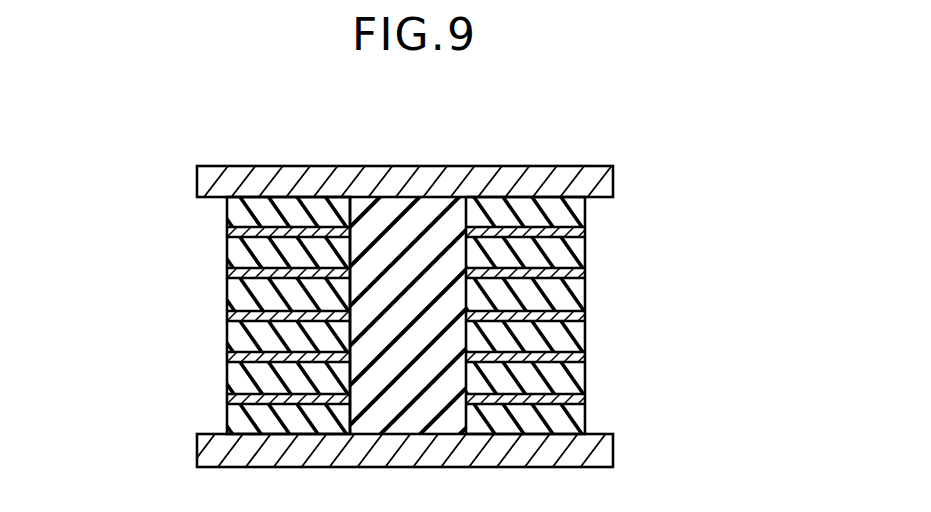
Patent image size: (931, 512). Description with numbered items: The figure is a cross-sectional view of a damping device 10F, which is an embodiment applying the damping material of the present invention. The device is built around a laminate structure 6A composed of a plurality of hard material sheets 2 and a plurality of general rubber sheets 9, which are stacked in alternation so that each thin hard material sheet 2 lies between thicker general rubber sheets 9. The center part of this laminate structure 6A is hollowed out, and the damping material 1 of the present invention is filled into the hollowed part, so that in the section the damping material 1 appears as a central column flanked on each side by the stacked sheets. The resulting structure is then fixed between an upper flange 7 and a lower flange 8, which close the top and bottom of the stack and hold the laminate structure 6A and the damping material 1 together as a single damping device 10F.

The damping material 1 is at (437, 232).
The hard material sheets 2 is at (585, 231).
The laminate structure 6A is at (219, 319).
The flange 7 is at (605, 185).
The flange 8 is at (605, 453).
The general rubber sheets 9 is at (585, 211).
The damping device 10F is at (768, 251).